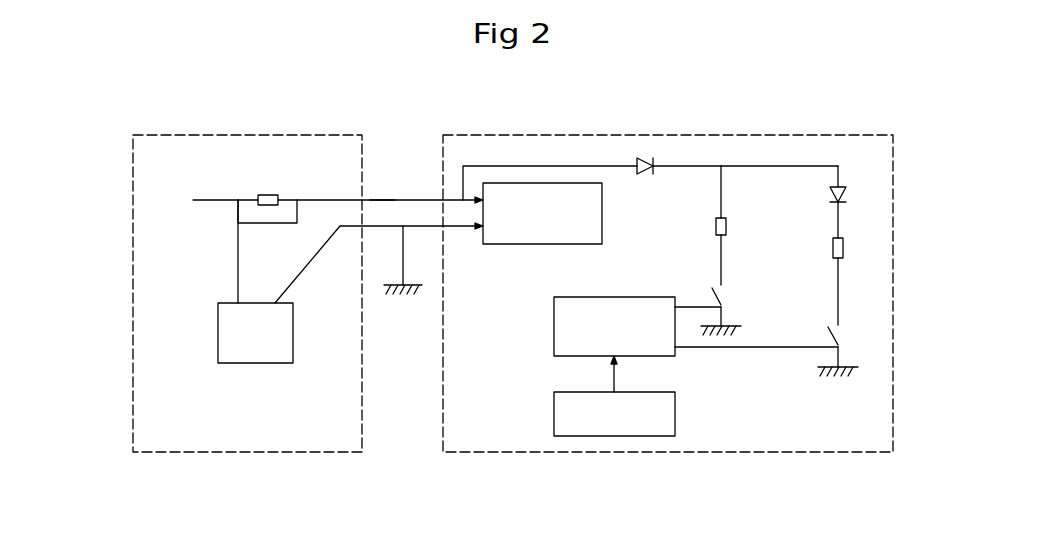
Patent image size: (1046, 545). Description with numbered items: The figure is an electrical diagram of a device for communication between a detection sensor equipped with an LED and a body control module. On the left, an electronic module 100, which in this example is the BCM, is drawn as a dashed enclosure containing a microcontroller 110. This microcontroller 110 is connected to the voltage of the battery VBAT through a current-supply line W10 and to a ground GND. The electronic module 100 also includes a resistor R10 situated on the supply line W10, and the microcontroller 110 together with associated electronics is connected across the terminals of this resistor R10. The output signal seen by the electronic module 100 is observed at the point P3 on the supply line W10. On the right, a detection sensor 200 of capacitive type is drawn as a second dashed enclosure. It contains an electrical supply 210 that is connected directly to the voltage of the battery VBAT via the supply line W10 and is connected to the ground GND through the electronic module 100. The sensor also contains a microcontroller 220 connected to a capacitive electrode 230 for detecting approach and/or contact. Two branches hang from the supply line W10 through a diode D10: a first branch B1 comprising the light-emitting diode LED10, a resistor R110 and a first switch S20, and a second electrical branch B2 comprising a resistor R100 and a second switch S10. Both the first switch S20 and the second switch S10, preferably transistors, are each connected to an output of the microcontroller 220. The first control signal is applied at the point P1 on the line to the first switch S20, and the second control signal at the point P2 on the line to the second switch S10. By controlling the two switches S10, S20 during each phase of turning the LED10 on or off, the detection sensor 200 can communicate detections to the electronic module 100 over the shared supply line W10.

The electronic module 100 is at (163, 475).
The microcontroller 110 is at (278, 470).
The detection sensor 200 is at (470, 476).
The electrical supply 210 is at (535, 500).
The microcontroller 220 is at (582, 477).
The capacitive electrode 230 is at (717, 476).
The voltage of the battery VBAT is at (199, 200).
The current-supply line W10 is at (218, 200).
The resistor R10 is at (267, 196).
The point P3 is at (381, 200).
The ground GND is at (402, 274).
The diode D10 is at (674, 182).
The first branch B1 is at (767, 166).
The second electrical branch B2 is at (721, 187).
The resistor R100 is at (692, 251).
The resistor R110 is at (809, 281).
The light-emitting diode LED10 is at (803, 202).
The second switch S10 is at (733, 311).
The first switch S20 is at (850, 351).
The point P1 is at (756, 347).
The point P2 is at (692, 306).